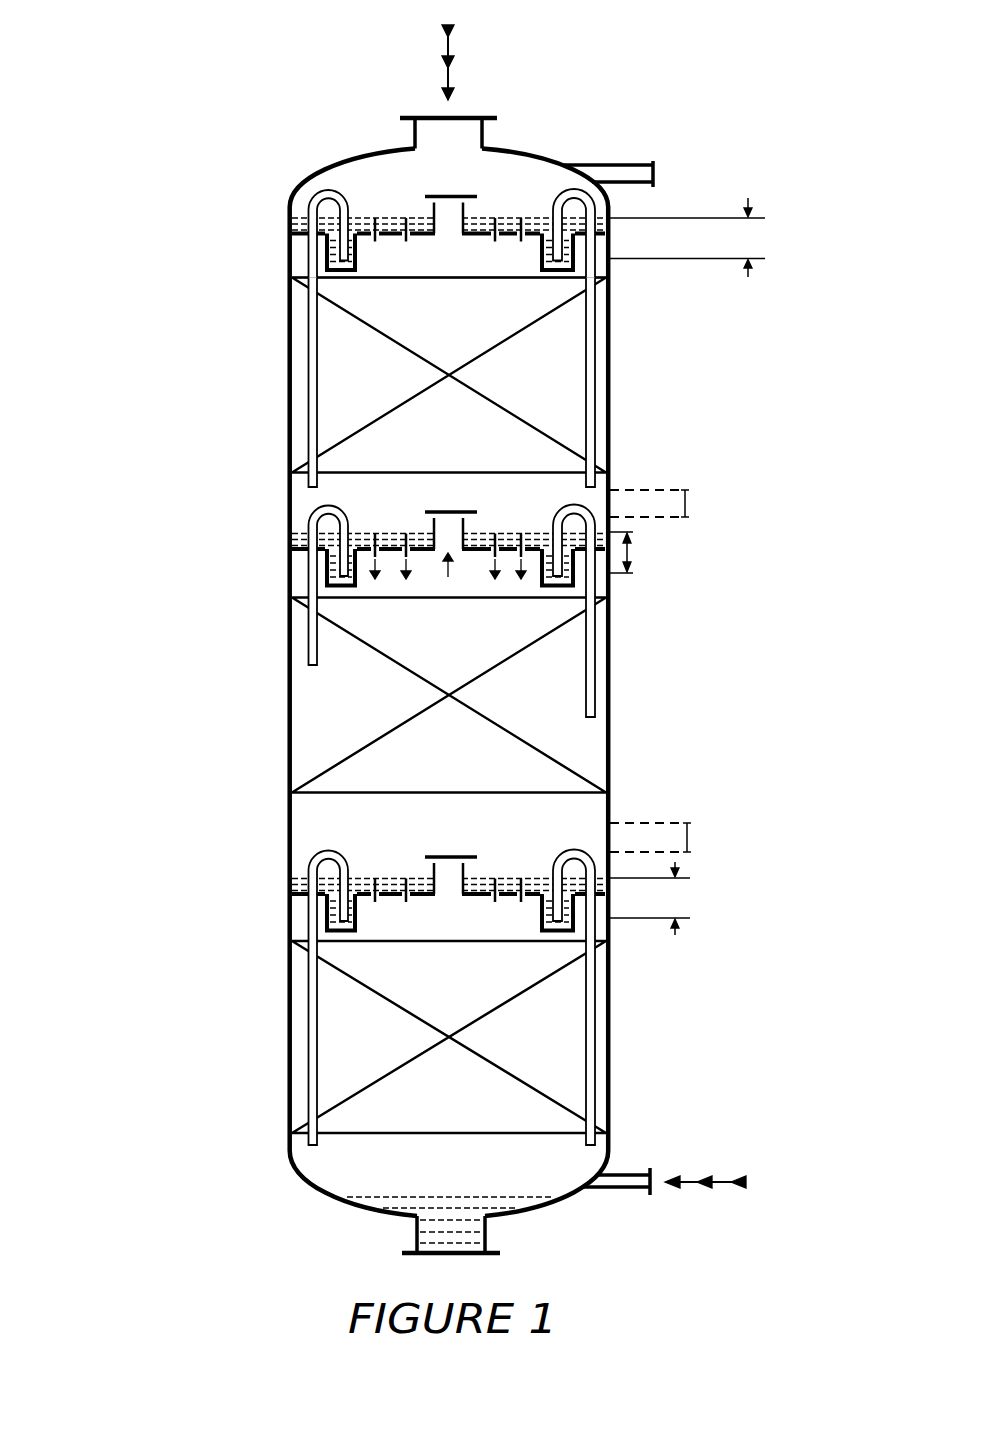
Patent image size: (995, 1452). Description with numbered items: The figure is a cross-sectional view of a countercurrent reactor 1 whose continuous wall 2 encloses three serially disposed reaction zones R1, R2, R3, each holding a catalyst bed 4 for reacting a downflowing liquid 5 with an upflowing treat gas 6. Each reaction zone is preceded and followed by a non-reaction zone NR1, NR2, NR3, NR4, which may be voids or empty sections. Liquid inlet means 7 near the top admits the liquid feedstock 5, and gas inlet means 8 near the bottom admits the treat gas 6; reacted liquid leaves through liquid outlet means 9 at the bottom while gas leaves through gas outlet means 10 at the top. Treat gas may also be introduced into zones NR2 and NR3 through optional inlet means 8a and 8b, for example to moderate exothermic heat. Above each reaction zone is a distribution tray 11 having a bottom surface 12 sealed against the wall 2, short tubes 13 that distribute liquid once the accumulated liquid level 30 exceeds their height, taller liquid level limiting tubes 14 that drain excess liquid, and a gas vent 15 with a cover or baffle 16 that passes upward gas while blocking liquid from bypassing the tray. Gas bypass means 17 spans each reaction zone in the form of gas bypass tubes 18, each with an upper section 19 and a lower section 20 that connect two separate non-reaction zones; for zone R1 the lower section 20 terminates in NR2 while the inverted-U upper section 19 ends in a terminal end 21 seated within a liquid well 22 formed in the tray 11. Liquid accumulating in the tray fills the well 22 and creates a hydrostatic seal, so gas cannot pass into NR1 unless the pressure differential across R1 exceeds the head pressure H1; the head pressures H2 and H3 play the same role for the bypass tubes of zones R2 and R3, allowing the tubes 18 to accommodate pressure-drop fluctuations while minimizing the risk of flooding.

The reactor 1 is at (324, 72).
The continuous wall 2 is at (287, 395).
The catalyst bed 4 is at (548, 407).
The liquid 5 is at (460, 43).
The treat gas 6 is at (700, 1197).
The liquid inlet means 7 is at (497, 137).
The gas inlet means 8 is at (635, 1152).
The optional inlet means 8a is at (685, 517).
The optional inlet means 8b is at (666, 823).
The liquid outlet means 9 is at (405, 1232).
The gas outlet means 10 is at (622, 183).
The distribution tray 11 is at (598, 245).
The bottom surface 12 is at (510, 243).
The short tubes 13 is at (407, 217).
The liquid level limiting tubes 14 is at (376, 217).
The gas vent 15 is at (463, 213).
The cover or baffle 16 is at (447, 194).
The gas bypass means 17 is at (258, 203).
The gas bypass tube 18 is at (310, 320).
The upper section 19 is at (307, 221).
The lower section 20 is at (303, 483).
The terminal end 21 is at (325, 256).
The liquid well 22 is at (356, 265).
The liquid level 30 is at (537, 215).
The non-reaction zone NR1 is at (345, 180).
The non-reaction zone NR2 is at (355, 488).
The non-reaction zone NR3 is at (350, 812).
The non-reaction zone NR4 is at (350, 1170).
The reaction zone R1 is at (483, 353).
The reaction zone R2 is at (483, 673).
The reaction zone R3 is at (483, 1015).
The head pressure H1 is at (687, 237).
The head pressure H2 is at (638, 553).
The head pressure H3 is at (649, 898).